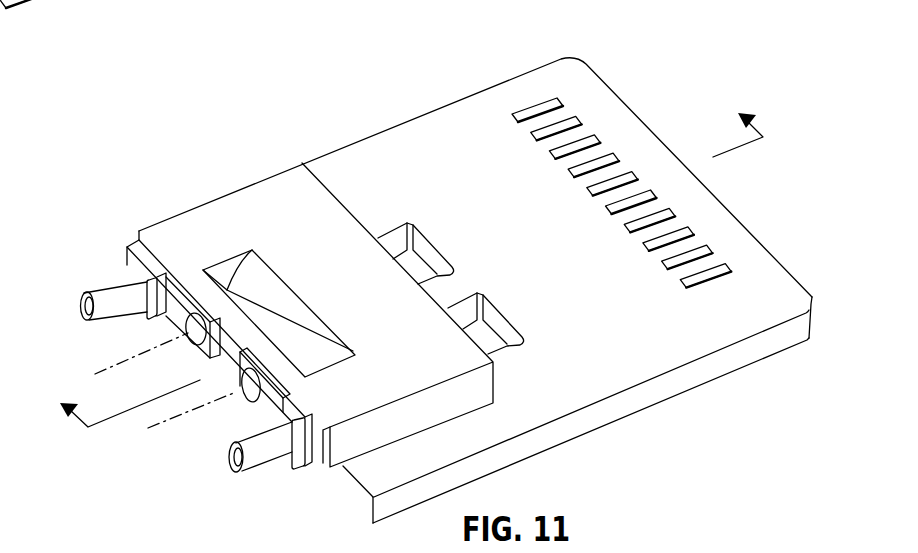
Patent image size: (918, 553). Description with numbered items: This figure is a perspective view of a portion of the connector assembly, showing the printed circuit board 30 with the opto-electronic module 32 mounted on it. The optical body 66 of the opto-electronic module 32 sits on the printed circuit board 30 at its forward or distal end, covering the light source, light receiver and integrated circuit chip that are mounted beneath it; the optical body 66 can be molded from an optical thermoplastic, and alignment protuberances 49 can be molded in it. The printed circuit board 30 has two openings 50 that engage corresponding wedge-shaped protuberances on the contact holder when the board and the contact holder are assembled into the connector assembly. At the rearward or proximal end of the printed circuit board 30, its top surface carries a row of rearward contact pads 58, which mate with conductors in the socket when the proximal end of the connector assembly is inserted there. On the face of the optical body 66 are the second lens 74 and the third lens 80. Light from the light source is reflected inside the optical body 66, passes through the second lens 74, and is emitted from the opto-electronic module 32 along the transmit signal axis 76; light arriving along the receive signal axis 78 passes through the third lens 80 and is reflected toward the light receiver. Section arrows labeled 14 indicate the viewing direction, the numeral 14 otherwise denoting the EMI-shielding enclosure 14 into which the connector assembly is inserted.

The EMI-shielding enclosure 14 is at (401, 257).
The printed circuit board 30 is at (397, 130).
The opto-electronic module 32 is at (239, 102).
The alignment protuberances 49 is at (106, 287).
The openings 50 is at (500, 325).
The rearward contact pads 58 is at (556, 96).
The optical body 66 is at (230, 192).
The second lens 74 is at (191, 322).
The transmit signal axis 76 is at (124, 362).
The receive signal axis 78 is at (187, 417).
The third lens 80 is at (247, 394).